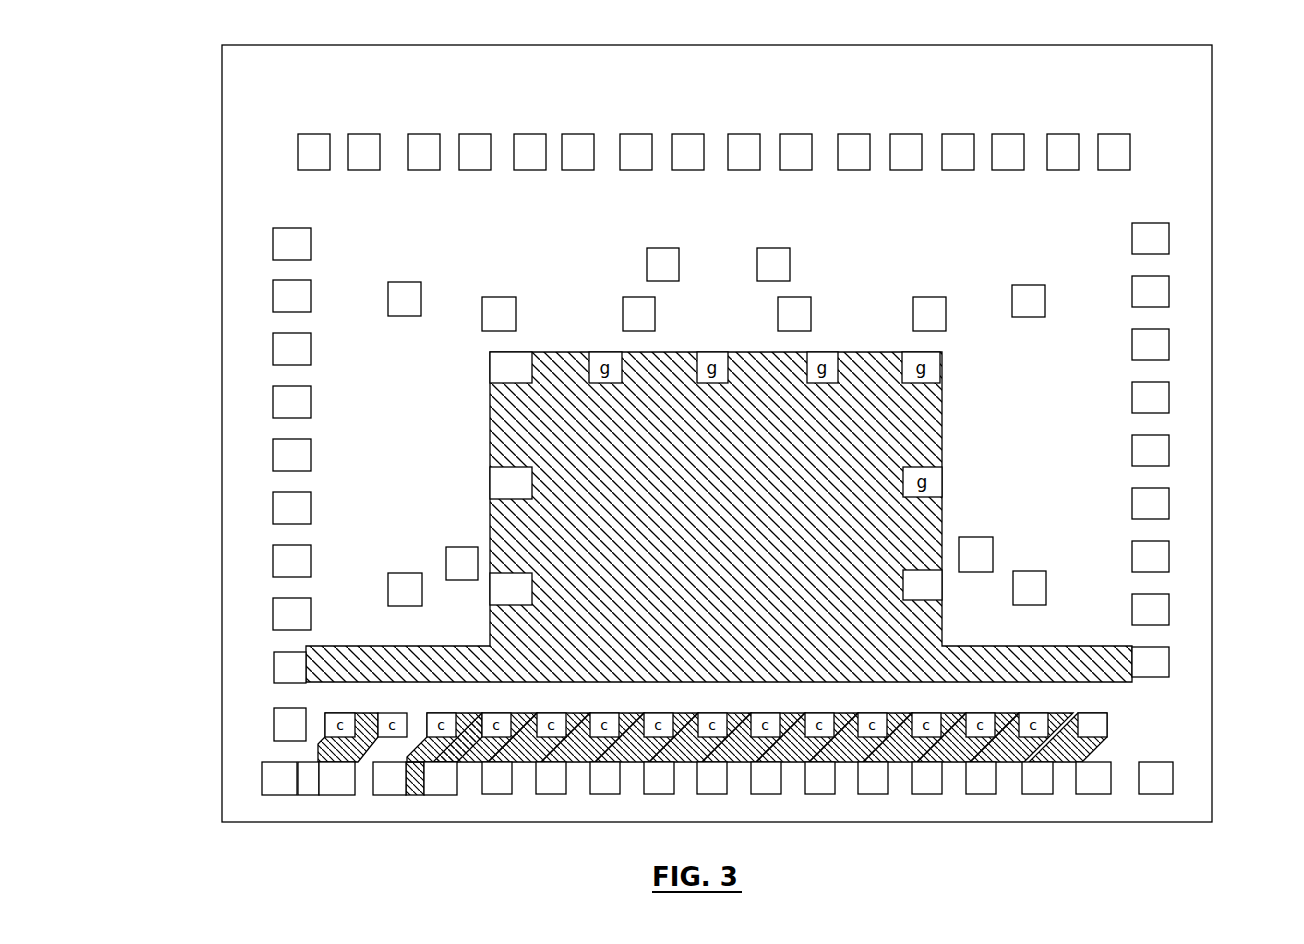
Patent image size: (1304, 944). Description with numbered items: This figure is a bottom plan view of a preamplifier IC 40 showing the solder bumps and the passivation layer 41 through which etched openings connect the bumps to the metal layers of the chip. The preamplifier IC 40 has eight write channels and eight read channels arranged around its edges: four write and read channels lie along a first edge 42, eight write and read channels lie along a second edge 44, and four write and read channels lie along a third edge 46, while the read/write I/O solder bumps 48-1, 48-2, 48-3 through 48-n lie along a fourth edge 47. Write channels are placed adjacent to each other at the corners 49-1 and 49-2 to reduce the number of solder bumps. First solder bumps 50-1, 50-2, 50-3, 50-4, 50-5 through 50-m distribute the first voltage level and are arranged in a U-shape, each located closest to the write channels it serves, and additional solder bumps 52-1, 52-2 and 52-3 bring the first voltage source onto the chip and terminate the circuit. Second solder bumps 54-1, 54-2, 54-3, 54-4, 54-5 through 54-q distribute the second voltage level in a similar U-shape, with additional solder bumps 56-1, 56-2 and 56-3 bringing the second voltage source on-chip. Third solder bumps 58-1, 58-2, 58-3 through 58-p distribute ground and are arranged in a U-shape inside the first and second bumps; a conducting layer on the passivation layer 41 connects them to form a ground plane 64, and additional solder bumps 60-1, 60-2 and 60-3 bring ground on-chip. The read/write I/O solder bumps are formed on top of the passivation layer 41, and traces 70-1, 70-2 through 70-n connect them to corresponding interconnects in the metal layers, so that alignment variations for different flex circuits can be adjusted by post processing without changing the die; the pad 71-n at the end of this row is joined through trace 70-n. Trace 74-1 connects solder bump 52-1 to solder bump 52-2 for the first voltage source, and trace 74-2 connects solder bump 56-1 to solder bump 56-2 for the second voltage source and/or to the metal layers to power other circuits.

The preamplifier IC 40 is at (1236, 154).
The passivation layer 41 is at (1192, 132).
The first edge 42 is at (1212, 305).
The second edge 44 is at (655, 45).
The third edge 46 is at (222, 541).
The fourth edge 47 is at (871, 822).
The read/write I/O solder bump 48-1 is at (492, 795).
The read/write I/O solder bump 48-2 is at (548, 795).
The read/write I/O solder bump 48-3 is at (603, 795).
The read/write I/O solder bump 48-n is at (1035, 795).
The corner 49-1 is at (284, 88).
The corner 49-2 is at (1185, 88).
The first solder bump 50-1 is at (404, 573).
The first solder bump 50-2 is at (400, 282).
The first solder bump 50-3 is at (663, 248).
The first solder bump 50-4 is at (773, 248).
The first solder bump 50-5 is at (1031, 285).
The first solder bump 50-m is at (1033, 571).
The additional solder bump 52-1 is at (278, 795).
The additional solder bump 52-2 is at (327, 795).
The additional solder bump 52-3 is at (1147, 794).
The second solder bump 54-1 is at (455, 547).
The second solder bump 54-2 is at (491, 297).
The second solder bump 54-3 is at (656, 322).
The second solder bump 54-4 is at (812, 305).
The second solder bump 54-5 is at (947, 322).
The second solder bump 54-q is at (983, 537).
The additional solder bump 56-1 is at (383, 795).
The additional solder bump 56-2 is at (433, 795).
The additional solder bump 56-3 is at (1090, 794).
The third solder bump 58-1 is at (533, 583).
The third solder bump 58-2 is at (533, 477).
The third solder bump 58-3 is at (533, 362).
The third solder bump 58-p is at (903, 585).
The additional solder bump 60-1 is at (300, 650).
The additional solder bump 60-2 is at (1170, 665).
The additional solder bump 60-3 is at (273, 718).
The ground plane 64 is at (731, 626).
The trace 70-1 is at (531, 723).
The trace 70-2 is at (588, 723).
The trace 70-n is at (1082, 746).
The capacitor pad 71-n is at (1095, 708).
The trace 74-1 is at (368, 720).
The trace 74-2 is at (467, 720).